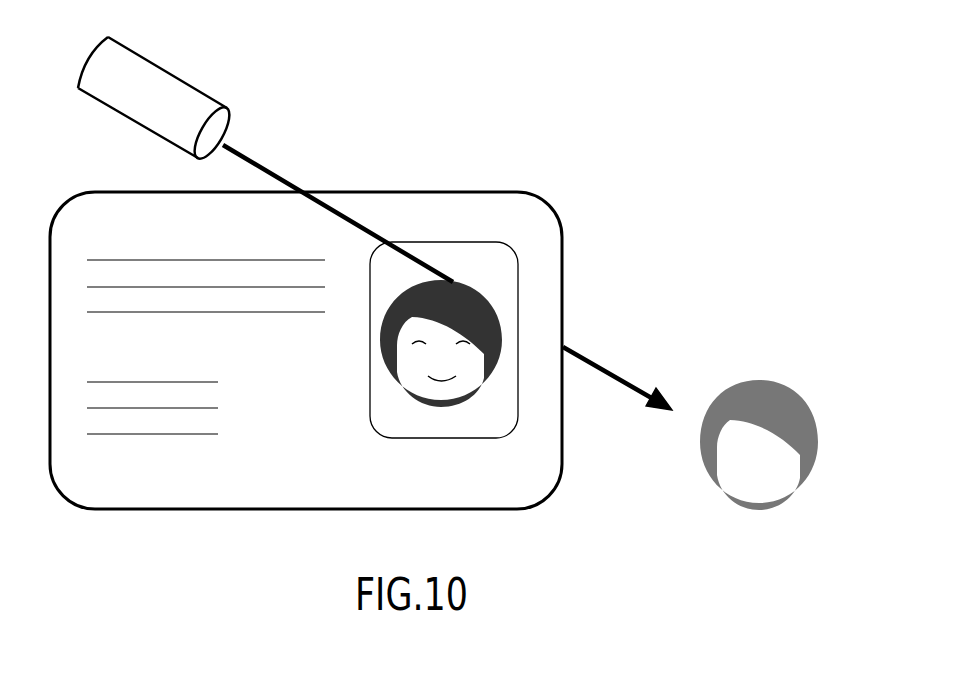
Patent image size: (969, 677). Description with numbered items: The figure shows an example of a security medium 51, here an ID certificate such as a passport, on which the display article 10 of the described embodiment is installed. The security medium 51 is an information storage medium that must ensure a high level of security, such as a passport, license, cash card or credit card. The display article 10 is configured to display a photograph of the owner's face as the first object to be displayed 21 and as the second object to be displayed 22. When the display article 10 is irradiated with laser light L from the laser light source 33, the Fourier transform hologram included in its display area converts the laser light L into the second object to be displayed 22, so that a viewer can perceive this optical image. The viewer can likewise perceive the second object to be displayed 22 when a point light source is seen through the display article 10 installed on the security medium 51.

The display article 10 is at (542, 257).
The first object to be displayed 21 is at (493, 395).
The second object to be displayed 22 is at (764, 365).
The laser light source 33 is at (155, 93).
The laser light L is at (260, 165).
The security medium 51 is at (452, 152).